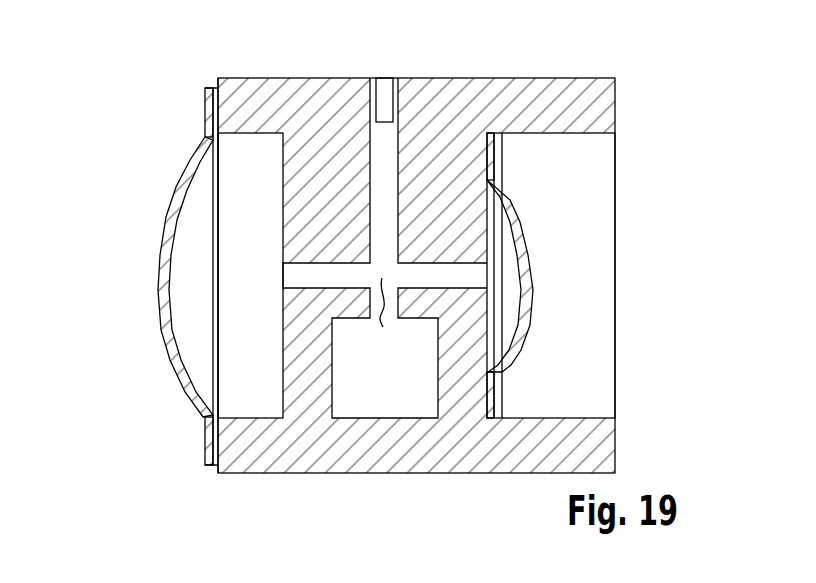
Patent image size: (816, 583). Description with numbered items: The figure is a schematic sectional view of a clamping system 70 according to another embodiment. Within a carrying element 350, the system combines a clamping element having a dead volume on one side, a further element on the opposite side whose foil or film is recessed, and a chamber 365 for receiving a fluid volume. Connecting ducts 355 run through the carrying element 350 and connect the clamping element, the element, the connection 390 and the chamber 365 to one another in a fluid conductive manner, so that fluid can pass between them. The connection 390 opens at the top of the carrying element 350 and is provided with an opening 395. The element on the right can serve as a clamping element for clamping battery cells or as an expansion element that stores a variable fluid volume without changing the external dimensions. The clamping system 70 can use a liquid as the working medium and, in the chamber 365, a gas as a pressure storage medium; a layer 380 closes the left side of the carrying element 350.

The clamping system 70 is at (563, 45).
The carrying element 350 is at (312, 78).
The carrier layer 380 is at (214, 84).
The connection 390 is at (362, 78).
The opening 395 is at (386, 78).
The connecting ducts 355 is at (385, 368).
The chamber 365 is at (403, 387).